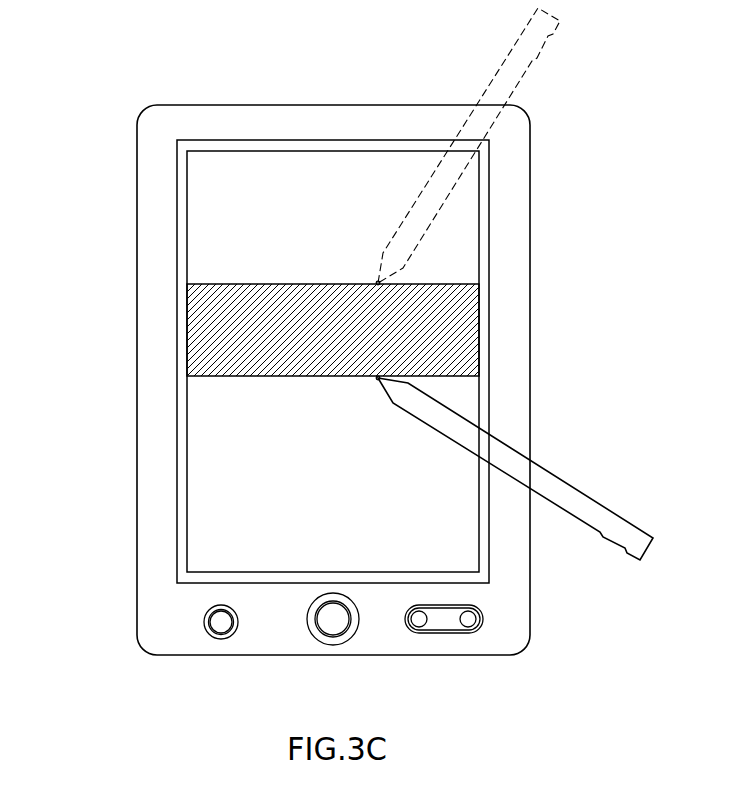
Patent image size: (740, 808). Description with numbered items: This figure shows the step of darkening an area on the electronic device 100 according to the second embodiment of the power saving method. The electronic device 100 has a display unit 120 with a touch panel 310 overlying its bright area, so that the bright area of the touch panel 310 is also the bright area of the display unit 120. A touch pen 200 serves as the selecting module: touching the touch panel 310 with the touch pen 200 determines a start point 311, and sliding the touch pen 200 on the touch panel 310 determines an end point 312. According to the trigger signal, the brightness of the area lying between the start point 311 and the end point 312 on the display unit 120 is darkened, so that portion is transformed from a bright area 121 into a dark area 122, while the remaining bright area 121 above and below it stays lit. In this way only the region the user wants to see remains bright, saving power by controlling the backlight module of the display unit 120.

The electronic device 100 is at (205, 70).
The display unit 120 is at (176, 305).
The bright area 121 is at (467, 220).
The dark area 122 is at (466, 328).
The touch pen 200 is at (490, 86).
The touch panel 310 is at (188, 415).
The start point 311 is at (379, 283).
The end point 312 is at (377, 379).